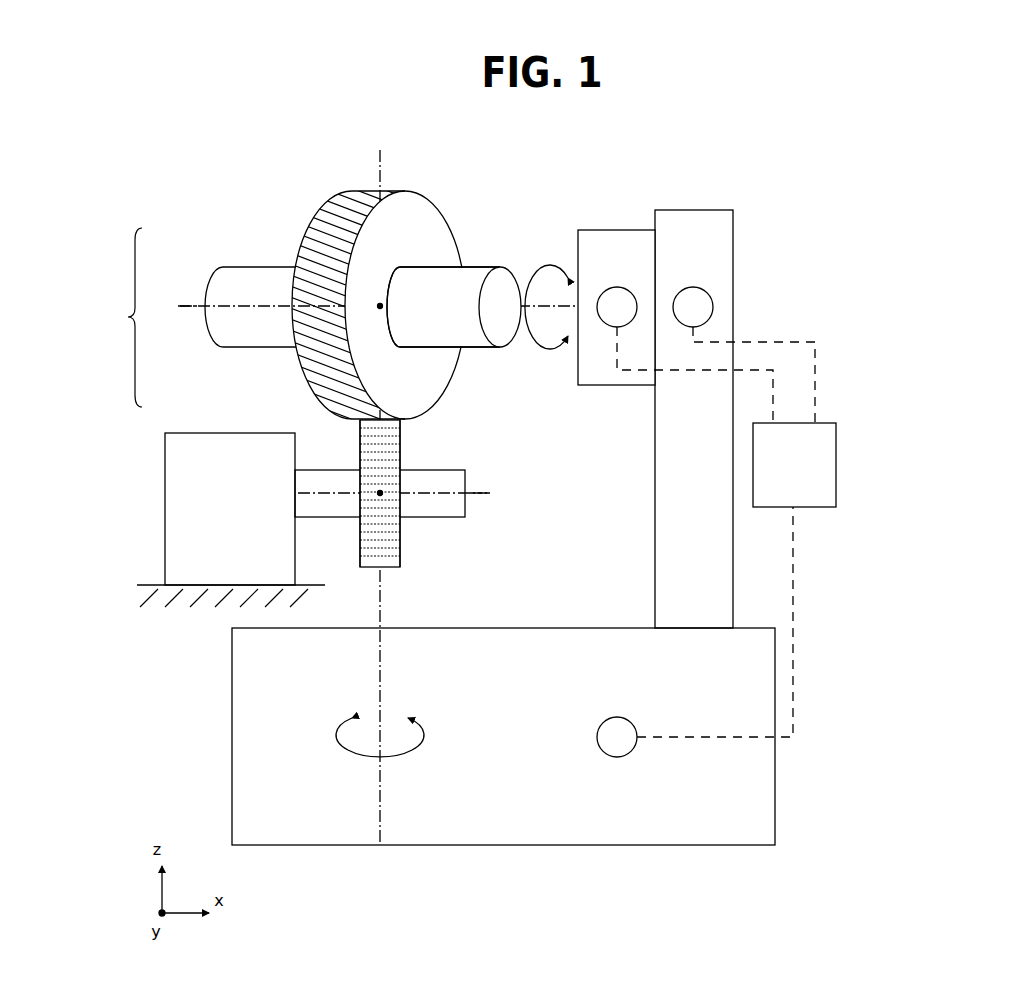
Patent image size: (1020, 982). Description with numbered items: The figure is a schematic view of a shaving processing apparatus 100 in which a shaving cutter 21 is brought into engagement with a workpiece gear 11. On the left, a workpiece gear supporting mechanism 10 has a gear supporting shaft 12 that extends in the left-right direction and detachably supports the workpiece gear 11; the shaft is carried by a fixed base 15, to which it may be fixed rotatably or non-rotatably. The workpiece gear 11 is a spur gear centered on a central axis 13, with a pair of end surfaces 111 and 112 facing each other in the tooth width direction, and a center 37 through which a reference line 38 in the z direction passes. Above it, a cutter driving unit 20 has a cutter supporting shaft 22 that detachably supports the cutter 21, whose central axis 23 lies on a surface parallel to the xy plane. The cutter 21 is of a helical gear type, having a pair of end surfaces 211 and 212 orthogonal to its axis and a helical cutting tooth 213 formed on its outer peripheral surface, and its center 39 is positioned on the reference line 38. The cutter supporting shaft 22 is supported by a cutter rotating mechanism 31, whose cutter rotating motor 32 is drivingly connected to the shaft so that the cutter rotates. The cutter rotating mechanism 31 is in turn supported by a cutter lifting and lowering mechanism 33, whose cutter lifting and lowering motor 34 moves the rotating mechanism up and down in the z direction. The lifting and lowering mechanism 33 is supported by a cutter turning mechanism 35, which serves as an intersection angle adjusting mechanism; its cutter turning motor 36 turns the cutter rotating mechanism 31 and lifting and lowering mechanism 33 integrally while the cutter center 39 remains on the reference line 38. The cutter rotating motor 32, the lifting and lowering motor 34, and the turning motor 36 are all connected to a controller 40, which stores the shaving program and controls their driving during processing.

The shaving processing apparatus 100 is at (112, 317).
The workpiece gear supporting mechanism 10 is at (346, 494).
The workpiece gear 11 is at (381, 482).
The end surface 111 is at (358, 445).
The end surface 112 is at (402, 445).
The gear supporting shaft 12 is at (467, 482).
The central axis 13 is at (477, 493).
The fixed base 15 is at (165, 525).
The cutter driving unit 20 is at (337, 310).
The shaving cutter 21 is at (366, 310).
The end surface 211 is at (312, 221).
The end surface 212 is at (425, 196).
The cutting tooth 213 is at (342, 360).
The cutter supporting shaft 22 is at (258, 267).
The central axis 23 is at (187, 310).
The cutter rotating mechanism 31 is at (597, 229).
The cutter rotating motor 32 is at (620, 287).
The cutter lifting and lowering mechanism 33 is at (717, 210).
The cutter lifting and lowering motor 34 is at (713, 292).
The cutter turning mechanism 35 is at (613, 627).
The cutter turning motor 36 is at (617, 757).
The center 37 is at (378, 495).
The reference line 38 is at (382, 176).
The center 39 is at (383, 305).
The controller 40 is at (817, 508).